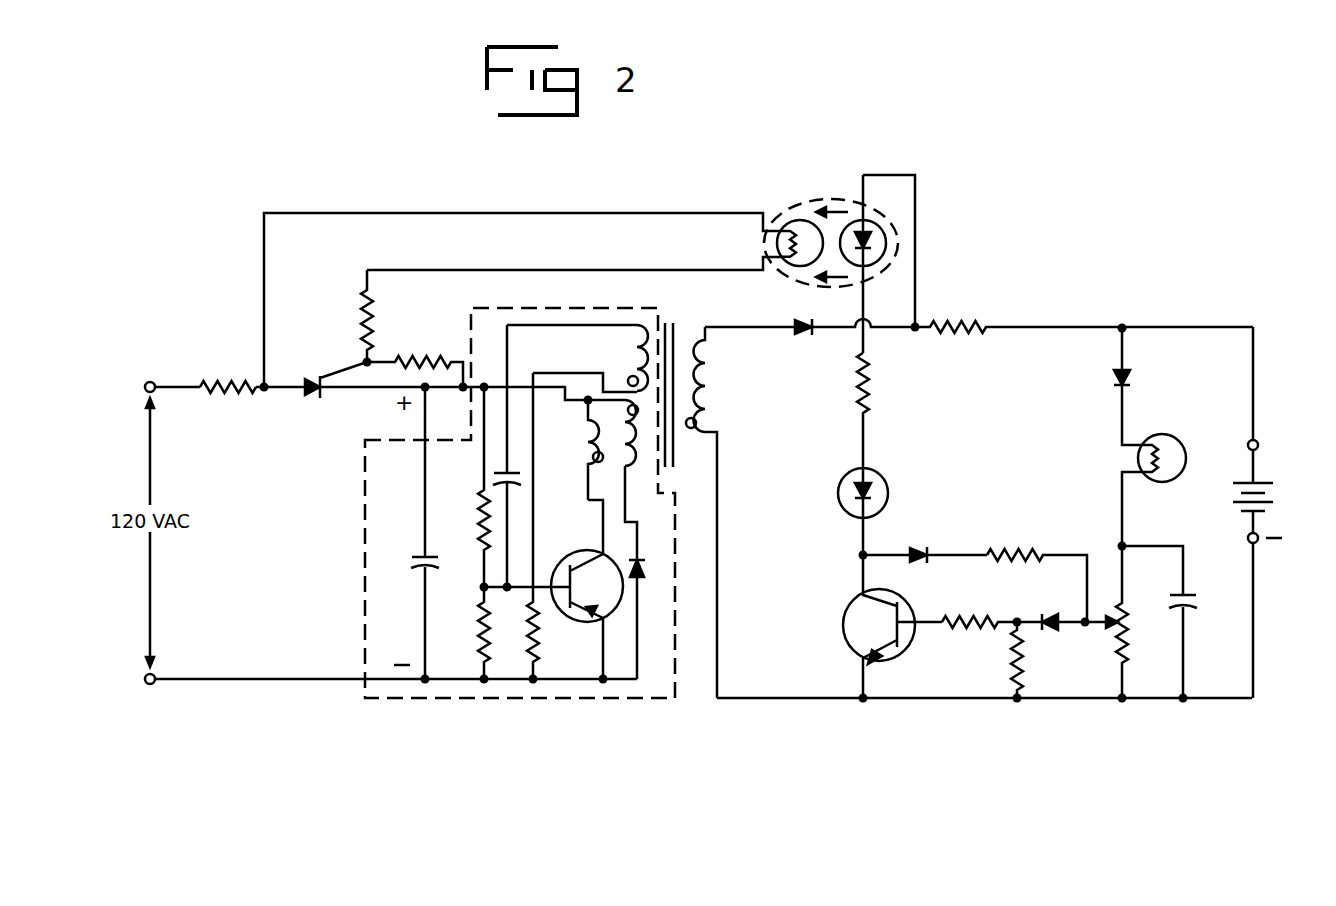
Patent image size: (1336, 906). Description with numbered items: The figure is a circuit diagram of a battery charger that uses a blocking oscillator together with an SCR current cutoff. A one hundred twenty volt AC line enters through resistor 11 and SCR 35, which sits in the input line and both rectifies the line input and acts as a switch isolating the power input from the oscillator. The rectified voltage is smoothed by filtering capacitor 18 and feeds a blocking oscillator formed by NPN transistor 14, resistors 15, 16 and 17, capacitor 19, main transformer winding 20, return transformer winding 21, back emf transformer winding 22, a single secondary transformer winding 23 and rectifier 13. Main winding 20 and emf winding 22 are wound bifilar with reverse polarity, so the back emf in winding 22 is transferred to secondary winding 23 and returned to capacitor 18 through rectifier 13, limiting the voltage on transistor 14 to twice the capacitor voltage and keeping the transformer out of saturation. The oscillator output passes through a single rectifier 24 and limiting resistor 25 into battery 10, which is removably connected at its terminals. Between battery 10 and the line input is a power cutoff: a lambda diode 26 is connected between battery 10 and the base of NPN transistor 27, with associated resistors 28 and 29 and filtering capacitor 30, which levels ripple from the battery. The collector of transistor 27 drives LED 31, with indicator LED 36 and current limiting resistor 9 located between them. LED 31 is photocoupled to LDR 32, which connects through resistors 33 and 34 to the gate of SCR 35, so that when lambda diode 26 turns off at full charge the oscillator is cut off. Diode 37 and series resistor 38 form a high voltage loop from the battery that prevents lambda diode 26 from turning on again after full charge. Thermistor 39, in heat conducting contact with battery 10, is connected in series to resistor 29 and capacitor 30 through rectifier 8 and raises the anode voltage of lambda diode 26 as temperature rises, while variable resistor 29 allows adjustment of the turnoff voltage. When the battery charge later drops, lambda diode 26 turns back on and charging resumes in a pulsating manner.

The rectifier 8 is at (1134, 374).
The current limiting resistor 9 is at (872, 400).
The battery 10 is at (1276, 495).
The resistor 11 is at (236, 393).
The rectifier 13 is at (644, 582).
The NPN transistor 14 is at (576, 560).
The resistor 15 is at (478, 518).
The resistor 16 is at (480, 632).
The resistor 17 is at (541, 651).
The filtering capacitor 18 is at (420, 573).
The capacitor 19 is at (512, 487).
The main transformer winding 20 is at (580, 456).
The return transformer winding 21 is at (624, 356).
The back emf transformer winding 22 is at (641, 480).
The secondary transformer winding 23 is at (712, 353).
The rectifier 24 is at (806, 343).
The limiting resistor 25 is at (972, 322).
The lambda diode 26 is at (1048, 630).
The NPN transistor 27 is at (904, 654).
The resistor 28 is at (962, 616).
The variable resistor 29 is at (1130, 640).
The filtering capacitor 30 is at (1190, 612).
The LED 31 is at (888, 240).
The LDR 32 is at (798, 222).
The resistor 33 is at (408, 357).
The resistor 34 is at (382, 302).
The SCR 35 is at (318, 400).
The LED 36 is at (890, 485).
The diode 37 is at (920, 545).
The resistor 38 is at (1012, 546).
The thermistor 39 is at (1176, 438).